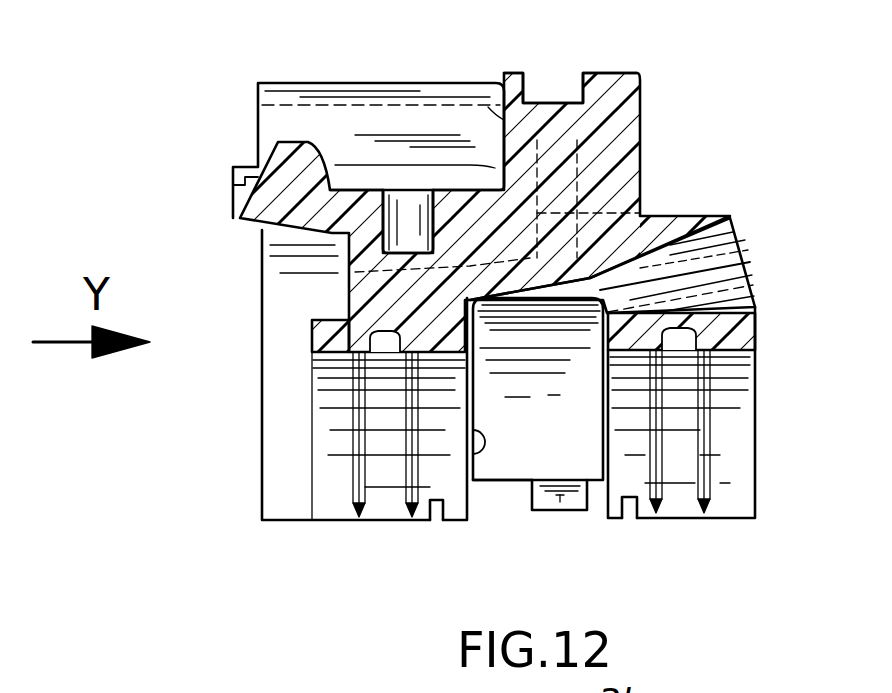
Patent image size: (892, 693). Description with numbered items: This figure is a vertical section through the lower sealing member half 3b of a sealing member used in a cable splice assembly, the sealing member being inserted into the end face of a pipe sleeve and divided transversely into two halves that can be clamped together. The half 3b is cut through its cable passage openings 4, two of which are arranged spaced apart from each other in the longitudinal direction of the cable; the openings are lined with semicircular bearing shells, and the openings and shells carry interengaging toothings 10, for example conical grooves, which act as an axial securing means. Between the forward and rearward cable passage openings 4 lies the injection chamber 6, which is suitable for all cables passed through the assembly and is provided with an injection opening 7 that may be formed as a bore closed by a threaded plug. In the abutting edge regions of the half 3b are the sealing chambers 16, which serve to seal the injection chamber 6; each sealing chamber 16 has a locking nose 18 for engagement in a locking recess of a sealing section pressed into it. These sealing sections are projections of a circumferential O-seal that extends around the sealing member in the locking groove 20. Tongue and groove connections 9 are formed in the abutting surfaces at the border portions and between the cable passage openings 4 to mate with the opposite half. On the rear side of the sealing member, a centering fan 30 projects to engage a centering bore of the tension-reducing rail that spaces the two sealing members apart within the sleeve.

The lower sealing member half 3b is at (600, 167).
The locking groove 20 is at (565, 97).
The centering fan 30 is at (300, 146).
The injection opening 7 is at (733, 240).
The cable passage opening 4 is at (343, 357).
The injection chamber 6 is at (590, 400).
The interengaging toothings 10 is at (358, 413).
The sealing chamber 16 is at (495, 492).
The locking nose 18 is at (565, 497).
The tongue and groove connection 9 is at (630, 523).